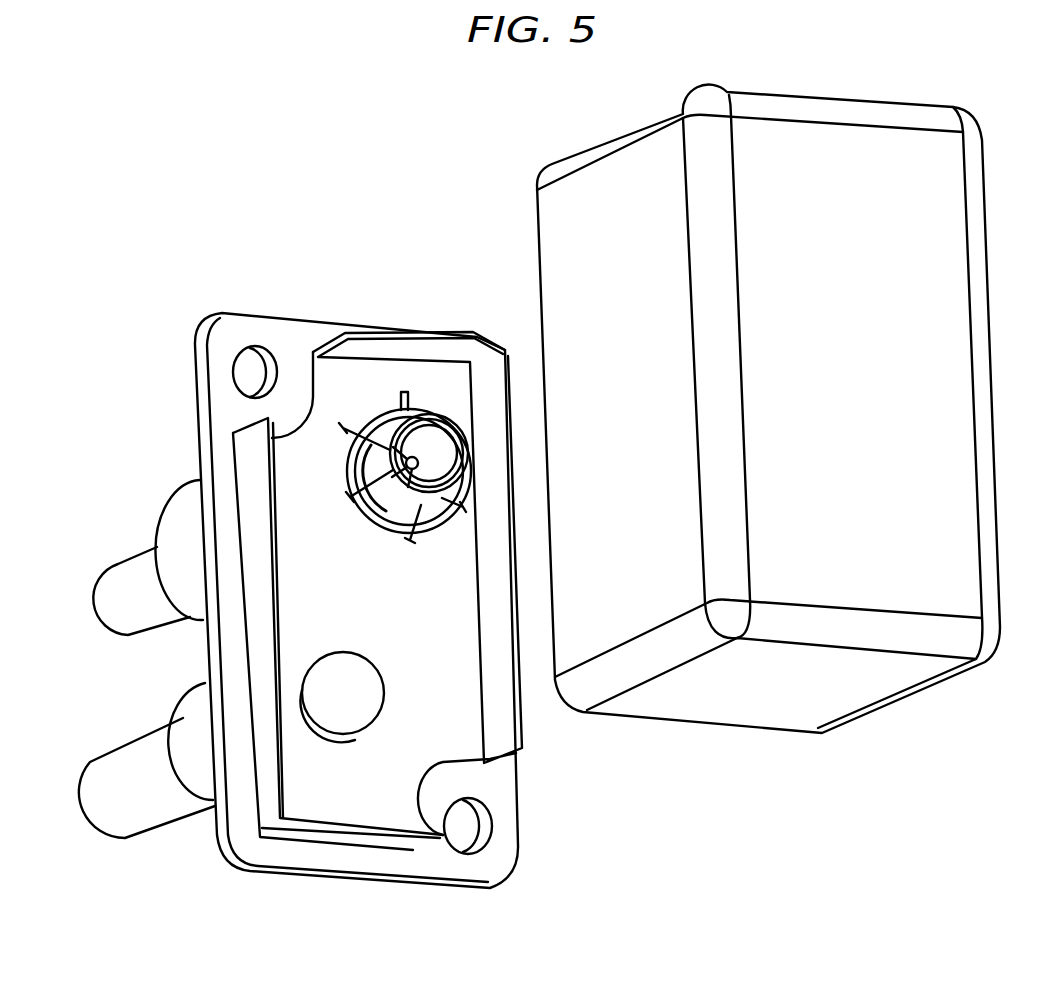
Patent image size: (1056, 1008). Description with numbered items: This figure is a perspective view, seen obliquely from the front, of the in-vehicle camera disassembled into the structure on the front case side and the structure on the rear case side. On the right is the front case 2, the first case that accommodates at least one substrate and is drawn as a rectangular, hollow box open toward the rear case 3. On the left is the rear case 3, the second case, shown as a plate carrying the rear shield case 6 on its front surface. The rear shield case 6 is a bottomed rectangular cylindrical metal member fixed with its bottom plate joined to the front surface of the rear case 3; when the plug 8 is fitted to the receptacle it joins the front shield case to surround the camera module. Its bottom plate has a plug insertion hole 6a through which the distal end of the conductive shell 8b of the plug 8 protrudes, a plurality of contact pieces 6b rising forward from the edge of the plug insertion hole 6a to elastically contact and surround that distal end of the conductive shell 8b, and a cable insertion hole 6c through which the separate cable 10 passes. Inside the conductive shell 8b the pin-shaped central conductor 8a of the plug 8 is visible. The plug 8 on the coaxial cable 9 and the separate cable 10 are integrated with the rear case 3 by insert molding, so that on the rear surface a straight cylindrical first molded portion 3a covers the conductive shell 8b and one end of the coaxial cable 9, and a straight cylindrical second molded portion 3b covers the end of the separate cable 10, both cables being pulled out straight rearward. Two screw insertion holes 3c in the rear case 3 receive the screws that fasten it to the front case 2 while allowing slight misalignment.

The front case 2 is at (555, 162).
The rear case 3 is at (222, 322).
The first molded portion 3a is at (175, 498).
The second molded portion 3b is at (180, 710).
The screw insertion hole 3c is at (236, 368).
The rear shield case 6 is at (523, 710).
The plug insertion hole 6a is at (383, 408).
The contact piece 6b is at (382, 430).
The cable insertion hole 6c is at (327, 747).
The plug 8 is at (445, 403).
The central conductor 8a is at (418, 445).
The conductive shell 8b is at (465, 418).
The coaxial cable 9 is at (121, 558).
The separate cable 10 is at (115, 742).